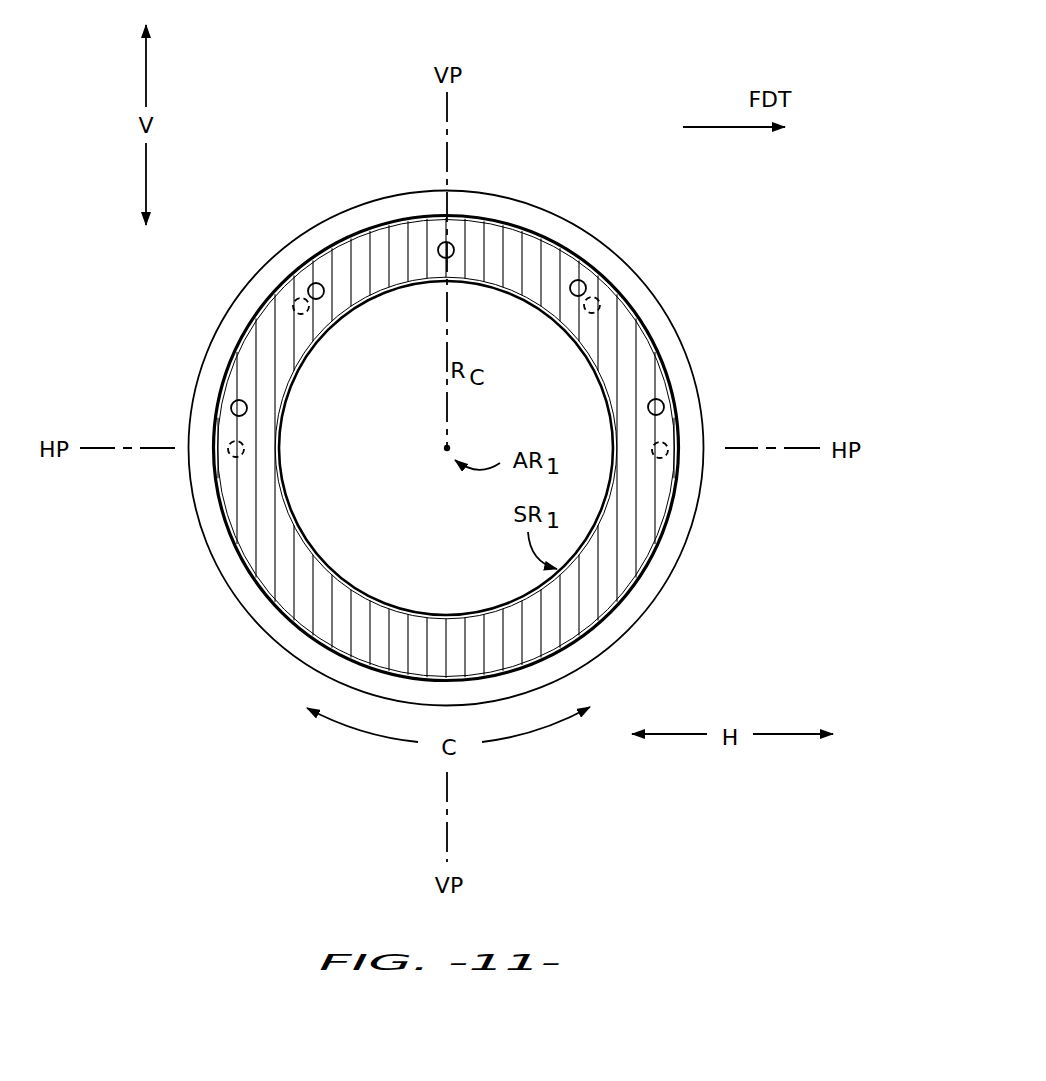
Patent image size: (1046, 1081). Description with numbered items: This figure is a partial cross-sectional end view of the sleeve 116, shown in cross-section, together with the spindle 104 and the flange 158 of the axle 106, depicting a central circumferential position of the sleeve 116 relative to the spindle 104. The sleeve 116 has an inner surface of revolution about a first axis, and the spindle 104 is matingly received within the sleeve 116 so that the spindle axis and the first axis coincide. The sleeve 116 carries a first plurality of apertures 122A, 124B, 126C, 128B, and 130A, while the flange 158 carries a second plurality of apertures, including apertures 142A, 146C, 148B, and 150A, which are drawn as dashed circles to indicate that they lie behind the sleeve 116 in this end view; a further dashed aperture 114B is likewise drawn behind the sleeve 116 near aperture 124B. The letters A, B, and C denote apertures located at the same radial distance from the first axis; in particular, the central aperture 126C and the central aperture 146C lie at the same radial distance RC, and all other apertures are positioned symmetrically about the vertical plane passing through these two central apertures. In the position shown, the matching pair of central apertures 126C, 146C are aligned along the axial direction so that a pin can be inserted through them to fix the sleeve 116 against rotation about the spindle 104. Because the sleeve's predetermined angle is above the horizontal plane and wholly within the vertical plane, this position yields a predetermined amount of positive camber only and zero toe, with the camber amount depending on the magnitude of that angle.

The spindle 104 is at (428, 583).
The axle 106 is at (583, 240).
The sleeve 116 is at (627, 353).
The flange 158 is at (458, 203).
The central aperture 146C is at (437, 251).
The central aperture 126C is at (455, 251).
The aperture 128B is at (588, 287).
The aperture 148B is at (603, 308).
The aperture 124B is at (307, 288).
The aperture 114B is at (292, 307).
The aperture 122A is at (230, 412).
The aperture 142A is at (230, 457).
The aperture 130A is at (664, 410).
The aperture 150A is at (664, 454).